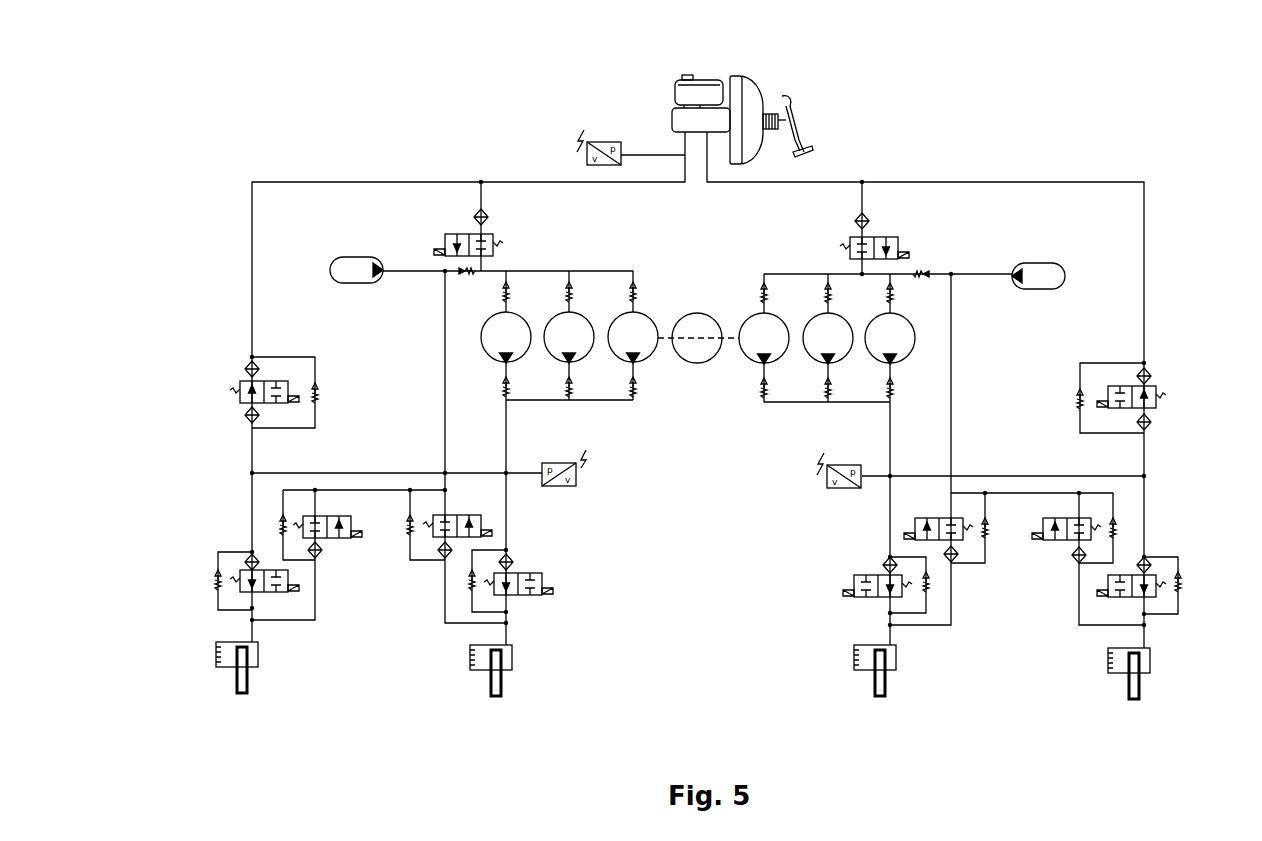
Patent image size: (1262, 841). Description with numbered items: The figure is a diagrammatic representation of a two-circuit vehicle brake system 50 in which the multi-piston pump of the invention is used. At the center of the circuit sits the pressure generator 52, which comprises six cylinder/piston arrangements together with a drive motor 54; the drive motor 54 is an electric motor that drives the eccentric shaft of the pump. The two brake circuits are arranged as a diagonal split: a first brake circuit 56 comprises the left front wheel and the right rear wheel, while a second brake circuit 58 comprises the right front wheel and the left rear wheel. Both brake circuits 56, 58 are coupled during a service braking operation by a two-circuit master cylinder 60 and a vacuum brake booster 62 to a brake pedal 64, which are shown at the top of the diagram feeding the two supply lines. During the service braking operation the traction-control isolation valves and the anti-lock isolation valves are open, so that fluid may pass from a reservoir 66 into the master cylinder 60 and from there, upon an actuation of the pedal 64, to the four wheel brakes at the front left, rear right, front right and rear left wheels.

The vehicle brake system 50 is at (396, 110).
The pressure generator 52 is at (637, 256).
The drive motor 54 is at (708, 322).
The first brake circuit 56 is at (367, 672).
The second brake circuit 58 is at (1020, 677).
The two-circuit master cylinder 60 is at (682, 127).
The vacuum brake booster 62 is at (742, 93).
The brake pedal 64 is at (800, 150).
The reservoir 66 is at (680, 90).